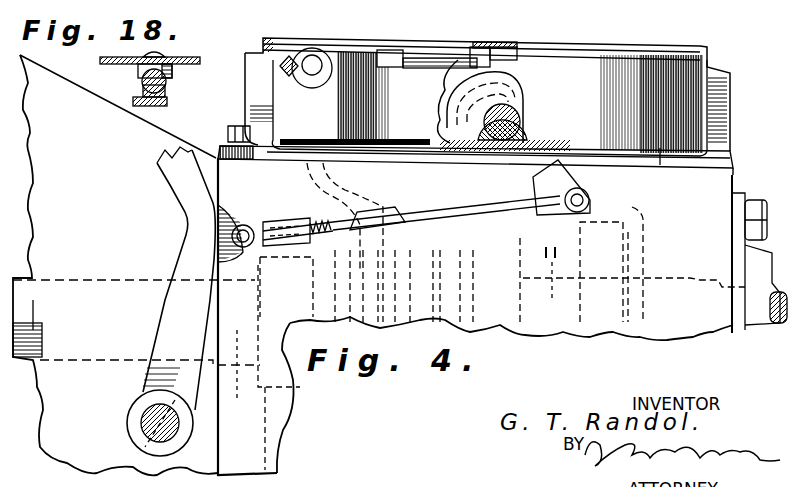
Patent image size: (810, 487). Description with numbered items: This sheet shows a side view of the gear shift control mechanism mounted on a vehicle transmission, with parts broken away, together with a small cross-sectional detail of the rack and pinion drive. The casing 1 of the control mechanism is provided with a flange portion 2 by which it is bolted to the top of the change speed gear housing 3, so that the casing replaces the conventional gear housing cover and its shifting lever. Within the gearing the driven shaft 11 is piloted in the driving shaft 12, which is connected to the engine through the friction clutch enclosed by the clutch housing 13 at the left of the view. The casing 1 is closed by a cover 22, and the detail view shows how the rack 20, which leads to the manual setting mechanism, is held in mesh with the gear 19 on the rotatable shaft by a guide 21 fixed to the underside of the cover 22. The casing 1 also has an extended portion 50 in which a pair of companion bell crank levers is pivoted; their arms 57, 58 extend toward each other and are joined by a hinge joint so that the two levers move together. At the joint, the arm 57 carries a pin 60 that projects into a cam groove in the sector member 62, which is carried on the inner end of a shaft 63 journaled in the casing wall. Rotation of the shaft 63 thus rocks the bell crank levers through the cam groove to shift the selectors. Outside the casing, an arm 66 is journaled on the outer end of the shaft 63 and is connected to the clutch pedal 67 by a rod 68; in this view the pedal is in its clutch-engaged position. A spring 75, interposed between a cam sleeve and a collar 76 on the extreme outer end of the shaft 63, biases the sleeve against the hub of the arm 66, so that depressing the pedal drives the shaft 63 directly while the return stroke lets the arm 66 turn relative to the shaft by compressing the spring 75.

In FIG. 4, the casing 1 is at (707, 120).
In FIG. 4, the flange portion 2 is at (733, 163).
In FIG. 4, the change speed gear housing 3 is at (703, 273).
In FIG. 4, the driven shaft 11 is at (550, 252).
In FIG. 4, the driving shaft 12 is at (259, 316).
In FIG. 4, the clutch housing 13 is at (115, 265).
In FIG. 18, the gear 19 is at (163, 103).
In FIG. 18, the rack 20 is at (143, 80).
In FIG. 4, the rack 20 is at (318, 60).
In FIG. 18, the guide 21 is at (175, 70).
In FIG. 18, the cover 22 is at (183, 40).
In FIG. 4, the cover 22 is at (510, 47).
In FIG. 4, the extended portion 50 is at (662, 160).
In FIG. 4, the arm 57 is at (477, 50).
In FIG. 4, the arm 58 is at (550, 45).
In FIG. 4, the pin 60 is at (452, 72).
In FIG. 4, the sector member 62 is at (507, 97).
In FIG. 4, the shaft 63 is at (500, 123).
In FIG. 4, the arm 66 is at (590, 198).
In FIG. 4, the clutch pedal 67 is at (136, 312).
In FIG. 4, the rod 68 is at (393, 227).
In FIG. 4, the spring 75 is at (293, 62).
In FIG. 4, the collar 76 is at (652, 5).